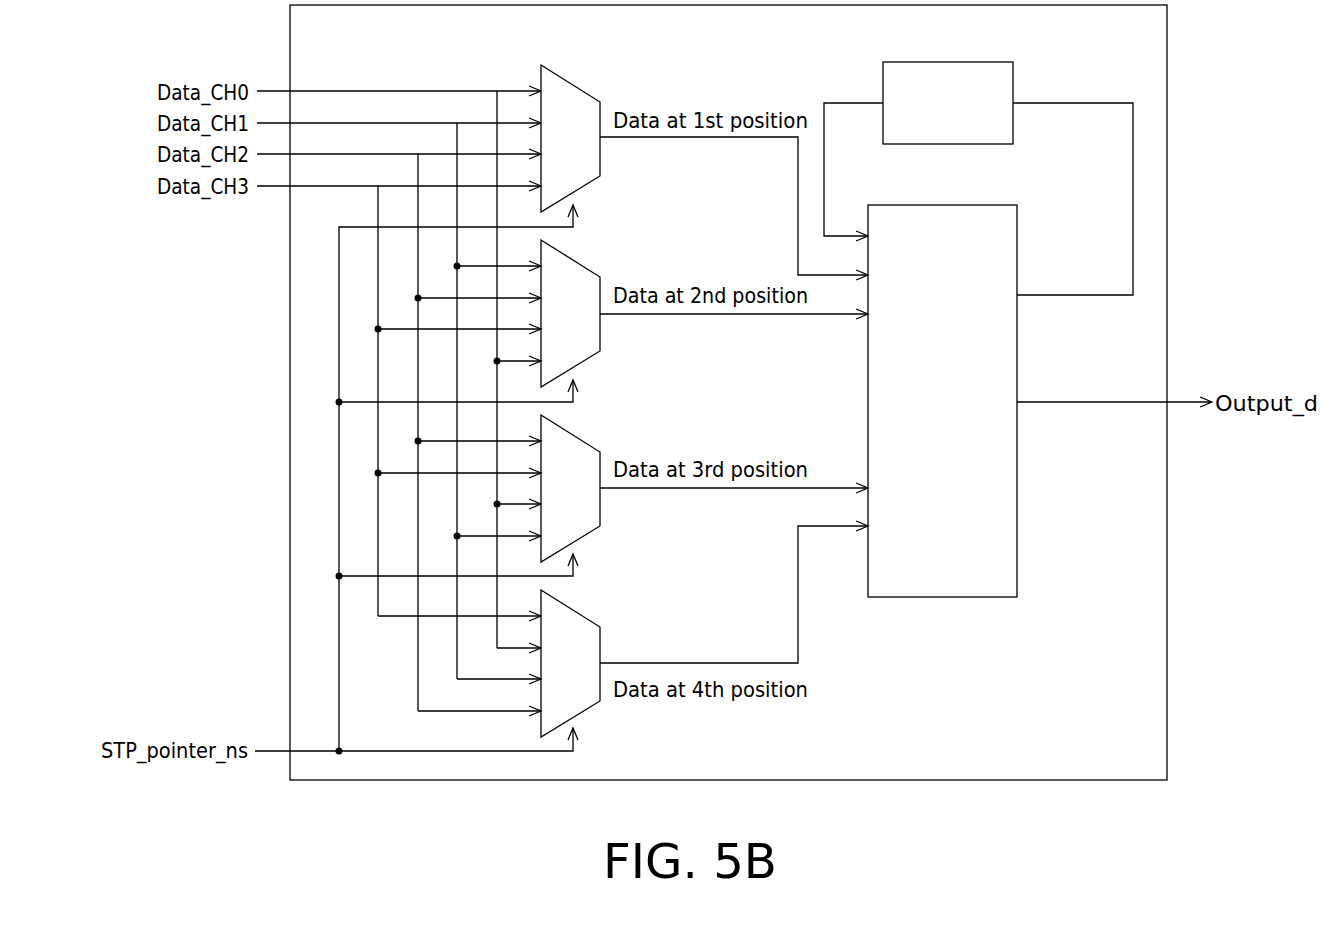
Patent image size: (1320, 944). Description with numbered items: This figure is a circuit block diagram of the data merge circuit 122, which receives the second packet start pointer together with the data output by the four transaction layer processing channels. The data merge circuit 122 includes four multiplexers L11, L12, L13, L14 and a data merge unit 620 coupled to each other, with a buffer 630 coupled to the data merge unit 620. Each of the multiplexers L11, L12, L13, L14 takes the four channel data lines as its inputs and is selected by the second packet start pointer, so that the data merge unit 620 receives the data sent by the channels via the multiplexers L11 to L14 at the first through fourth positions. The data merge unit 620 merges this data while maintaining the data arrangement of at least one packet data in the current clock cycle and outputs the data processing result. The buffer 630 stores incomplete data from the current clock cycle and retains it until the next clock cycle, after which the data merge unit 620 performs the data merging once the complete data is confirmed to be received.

The data merge circuit 122 is at (1233, 818).
The data merge unit 620 is at (942, 205).
The buffer 630 is at (942, 61).
The multiplexer L11 is at (575, 136).
The multiplexer L12 is at (575, 311).
The multiplexer L13 is at (575, 486).
The multiplexer L14 is at (575, 661).